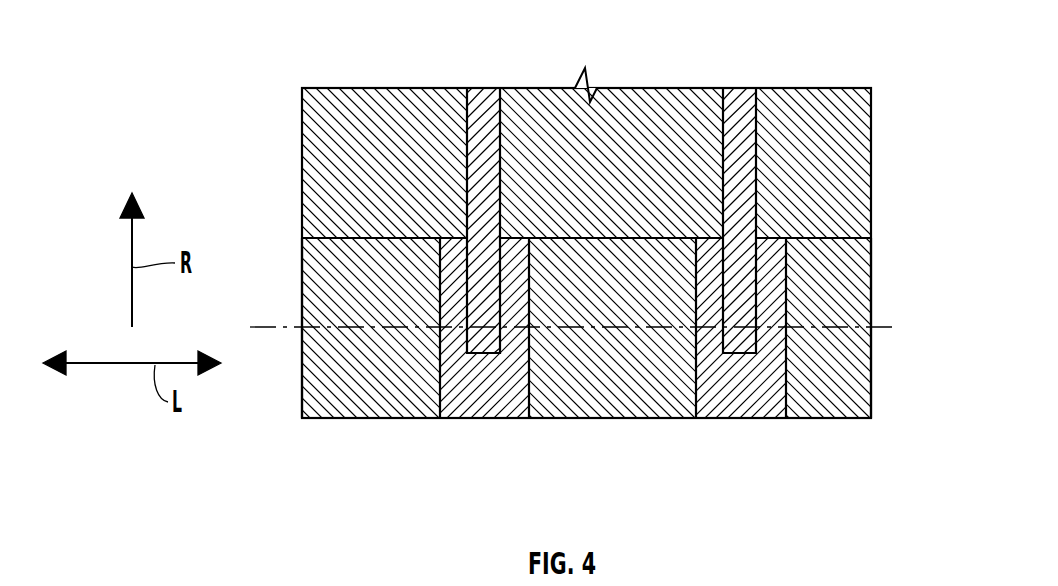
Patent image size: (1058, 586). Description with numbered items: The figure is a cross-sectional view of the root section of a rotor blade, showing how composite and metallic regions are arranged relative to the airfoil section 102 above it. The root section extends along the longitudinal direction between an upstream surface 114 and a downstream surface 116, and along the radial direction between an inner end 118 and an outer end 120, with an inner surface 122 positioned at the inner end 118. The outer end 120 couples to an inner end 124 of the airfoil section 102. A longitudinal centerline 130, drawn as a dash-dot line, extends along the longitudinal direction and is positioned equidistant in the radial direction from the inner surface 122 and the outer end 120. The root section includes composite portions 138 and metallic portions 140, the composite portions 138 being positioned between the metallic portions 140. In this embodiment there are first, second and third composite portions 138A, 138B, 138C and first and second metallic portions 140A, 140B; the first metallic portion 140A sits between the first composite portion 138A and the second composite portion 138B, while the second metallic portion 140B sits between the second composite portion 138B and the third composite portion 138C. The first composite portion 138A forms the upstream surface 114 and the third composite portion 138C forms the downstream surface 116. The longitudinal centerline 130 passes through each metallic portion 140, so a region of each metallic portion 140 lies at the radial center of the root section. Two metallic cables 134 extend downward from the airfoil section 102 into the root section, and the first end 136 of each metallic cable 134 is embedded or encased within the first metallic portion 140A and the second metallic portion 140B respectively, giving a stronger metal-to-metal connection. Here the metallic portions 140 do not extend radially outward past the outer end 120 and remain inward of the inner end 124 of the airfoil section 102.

The airfoil section 102 is at (550, 273).
The upstream surface 114 is at (302, 388).
The downstream surface 116 is at (862, 383).
The inner end 118 is at (646, 466).
The outer end 120 is at (280, 268).
The inner surface 122 is at (415, 420).
The inner end 124 is at (896, 208).
The longitudinal centerline 130 is at (886, 327).
The metallic cable 134 is at (487, 95).
The first end 136 is at (503, 366).
The composite portions 138 is at (599, 372).
The first composite portion 138A is at (347, 420).
The second composite portion 138B is at (585, 420).
The third composite portion 138C is at (850, 420).
The metallic portions 140 is at (598, 376).
The first metallic portion 140A is at (481, 420).
The second metallic portion 140B is at (730, 420).